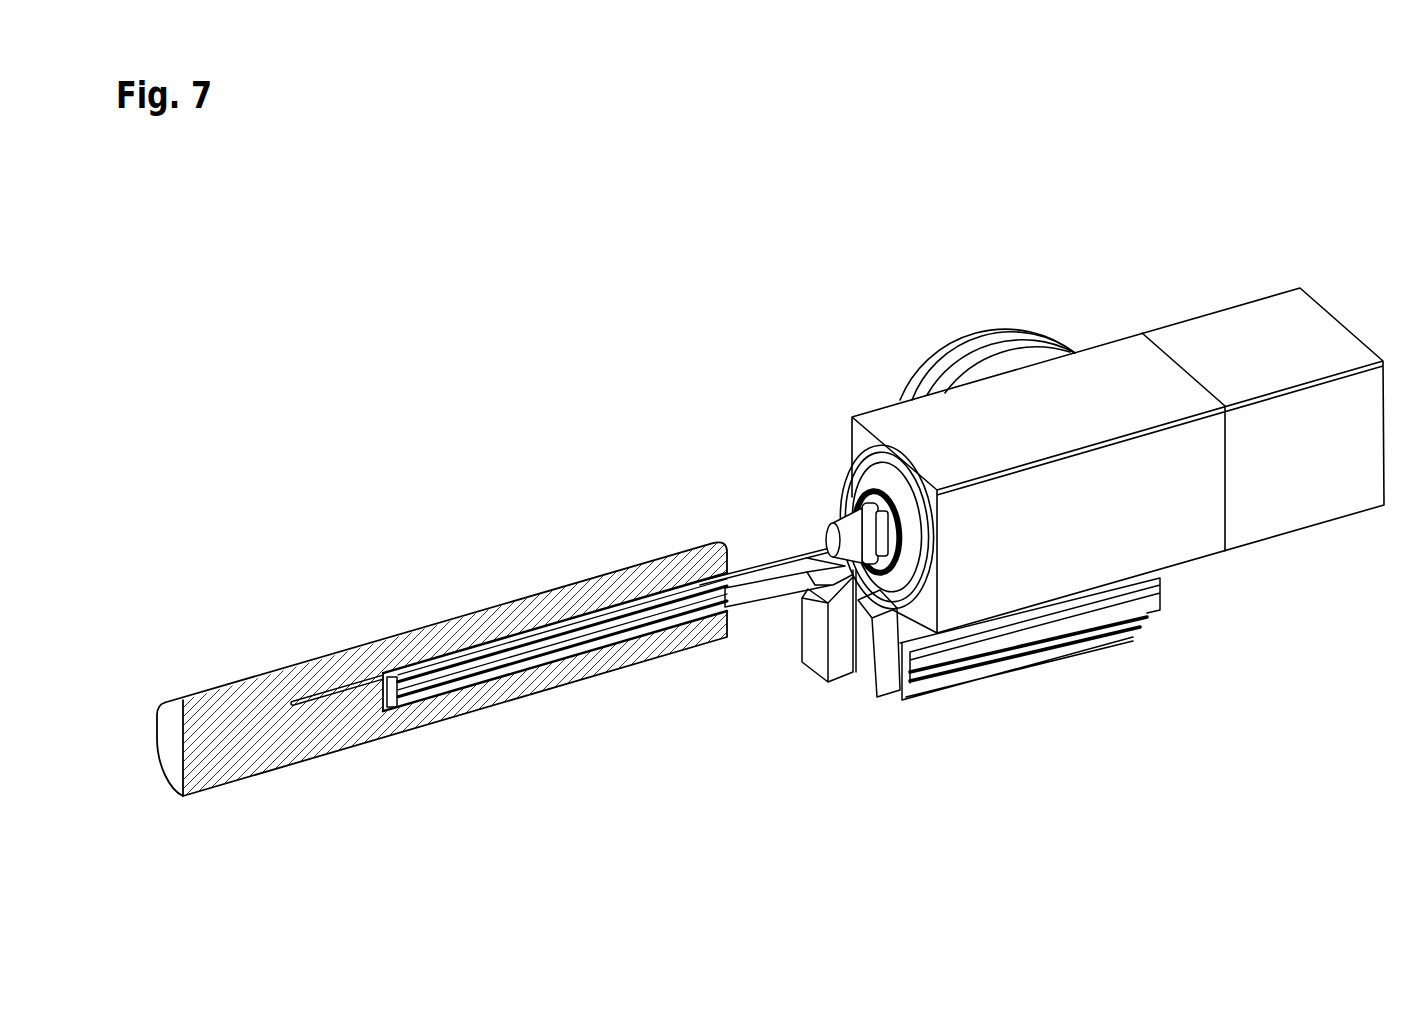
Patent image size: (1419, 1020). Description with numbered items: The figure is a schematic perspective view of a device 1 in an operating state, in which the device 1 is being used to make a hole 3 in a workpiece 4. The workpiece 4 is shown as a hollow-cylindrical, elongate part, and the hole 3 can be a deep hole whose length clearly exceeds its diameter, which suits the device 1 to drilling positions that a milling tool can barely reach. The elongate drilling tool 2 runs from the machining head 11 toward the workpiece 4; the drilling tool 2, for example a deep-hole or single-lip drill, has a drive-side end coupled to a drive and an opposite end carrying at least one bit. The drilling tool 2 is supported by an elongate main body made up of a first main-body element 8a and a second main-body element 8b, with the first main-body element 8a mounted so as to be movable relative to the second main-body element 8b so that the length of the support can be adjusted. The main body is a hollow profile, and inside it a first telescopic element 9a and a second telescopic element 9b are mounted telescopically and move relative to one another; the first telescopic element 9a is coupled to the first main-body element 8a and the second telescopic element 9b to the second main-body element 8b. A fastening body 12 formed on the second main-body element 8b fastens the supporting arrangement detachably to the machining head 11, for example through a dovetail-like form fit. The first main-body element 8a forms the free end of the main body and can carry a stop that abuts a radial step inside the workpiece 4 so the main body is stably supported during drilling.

The device 1 is at (594, 447).
The drilling tool 2 is at (742, 556).
The hole 3 is at (330, 687).
The workpiece 4 is at (225, 707).
The first main-body element 8a is at (457, 663).
The second main-body element 8b is at (645, 597).
The first telescopic element 9a is at (496, 665).
The second telescopic element 9b is at (627, 648).
The machining head 11 is at (1107, 308).
The fastening body 12 is at (869, 675).